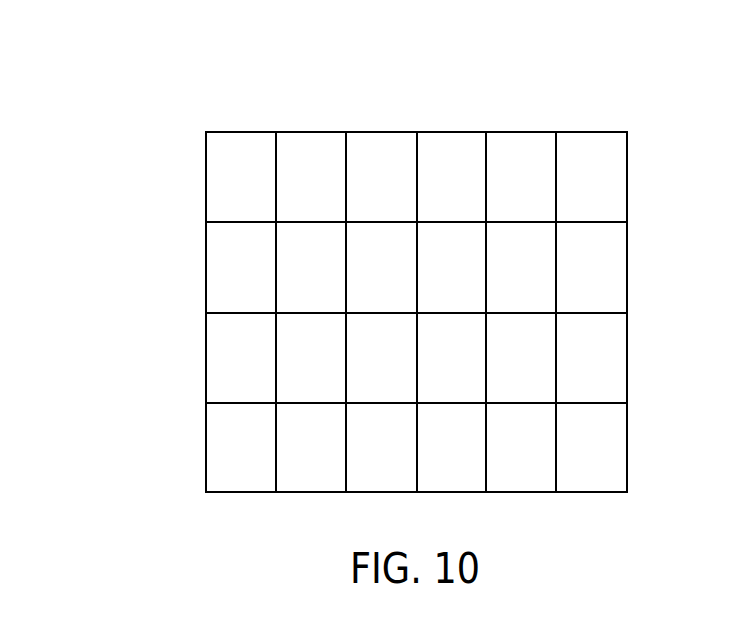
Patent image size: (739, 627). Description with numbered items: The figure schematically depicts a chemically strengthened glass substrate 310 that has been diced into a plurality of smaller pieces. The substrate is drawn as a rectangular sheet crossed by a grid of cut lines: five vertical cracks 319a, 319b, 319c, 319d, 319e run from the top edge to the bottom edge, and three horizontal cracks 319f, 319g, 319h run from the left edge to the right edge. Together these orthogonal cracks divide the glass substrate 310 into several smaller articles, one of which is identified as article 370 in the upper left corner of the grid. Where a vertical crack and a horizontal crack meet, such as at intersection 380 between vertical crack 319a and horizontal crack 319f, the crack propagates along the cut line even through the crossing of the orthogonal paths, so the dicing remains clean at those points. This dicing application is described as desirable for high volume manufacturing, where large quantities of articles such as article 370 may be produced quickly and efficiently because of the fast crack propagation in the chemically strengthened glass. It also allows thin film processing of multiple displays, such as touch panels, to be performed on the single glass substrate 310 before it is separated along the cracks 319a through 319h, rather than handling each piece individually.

The glass substrate 310 is at (339, 279).
The article 370 is at (240, 142).
The intersection 380 is at (277, 221).
The vertical crack 319a is at (276, 132).
The vertical crack 319b is at (346, 132).
The vertical crack 319c is at (417, 132).
The vertical crack 319d is at (486, 132).
The vertical crack 319e is at (556, 132).
The horizontal crack 319f is at (206, 222).
The horizontal crack 319g is at (206, 313).
The horizontal crack 319h is at (206, 403).